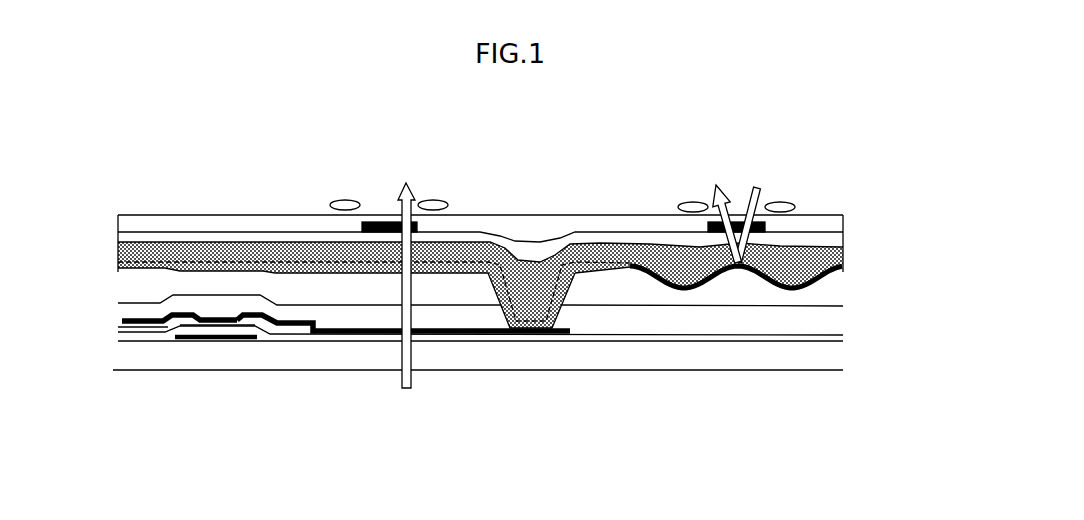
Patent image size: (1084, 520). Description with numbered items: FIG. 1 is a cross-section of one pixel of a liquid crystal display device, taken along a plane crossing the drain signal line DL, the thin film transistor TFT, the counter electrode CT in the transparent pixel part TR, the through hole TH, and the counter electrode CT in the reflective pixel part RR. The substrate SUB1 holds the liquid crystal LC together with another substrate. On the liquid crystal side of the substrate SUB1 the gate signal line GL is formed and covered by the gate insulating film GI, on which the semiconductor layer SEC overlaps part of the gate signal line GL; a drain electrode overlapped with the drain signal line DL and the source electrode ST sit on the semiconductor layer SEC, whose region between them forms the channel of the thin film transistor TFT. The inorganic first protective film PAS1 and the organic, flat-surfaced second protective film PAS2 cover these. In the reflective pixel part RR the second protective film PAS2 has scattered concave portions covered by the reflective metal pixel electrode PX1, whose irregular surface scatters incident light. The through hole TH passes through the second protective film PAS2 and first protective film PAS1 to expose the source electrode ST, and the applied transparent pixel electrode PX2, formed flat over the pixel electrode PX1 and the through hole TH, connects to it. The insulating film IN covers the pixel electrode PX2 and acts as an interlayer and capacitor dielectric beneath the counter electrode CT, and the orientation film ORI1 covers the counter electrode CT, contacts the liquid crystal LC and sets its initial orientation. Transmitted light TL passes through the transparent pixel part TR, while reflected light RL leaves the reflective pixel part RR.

The pixel electrode PX2 is at (293, 252).
The orientation film ORI1 is at (617, 215).
The insulating film IN is at (843, 237).
The counter electrode CT is at (865, 207).
The liquid crystal LC is at (793, 207).
The pixel electrode PX1 is at (843, 270).
The second protective film PAS2 is at (842, 298).
The through hole TH is at (573, 283).
The first protective film PAS1 is at (842, 320).
The gate insulating film GI is at (707, 342).
The substrate SUB1 is at (545, 348).
The drain signal line DL is at (138, 325).
The source electrode ST is at (290, 323).
The semiconductor layer SEC is at (257, 323).
The gate signal line GL is at (197, 341).
The thin film transistor TFT is at (310, 430).
The transmitted light TL is at (407, 275).
The transparent pixel part TR is at (448, 167).
The reflected light RL is at (729, 214).
The reflective pixel part RR is at (833, 170).